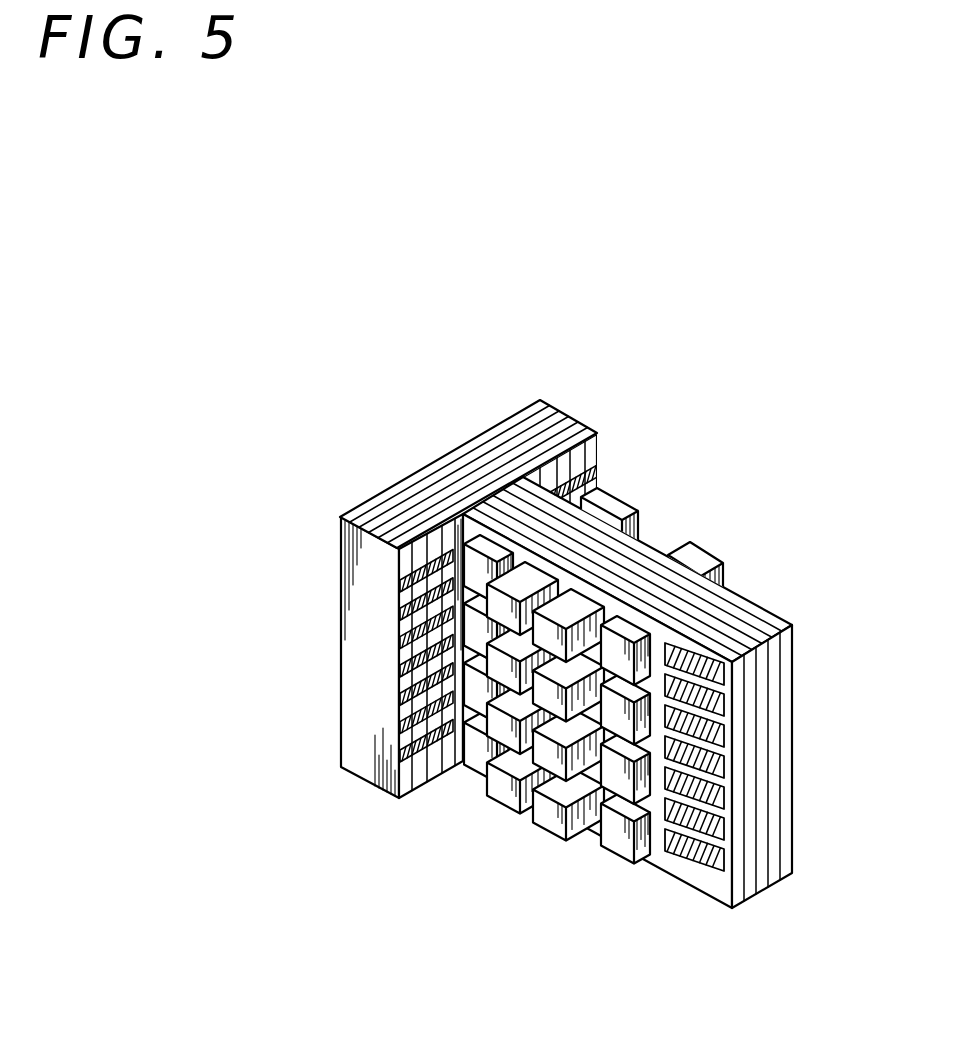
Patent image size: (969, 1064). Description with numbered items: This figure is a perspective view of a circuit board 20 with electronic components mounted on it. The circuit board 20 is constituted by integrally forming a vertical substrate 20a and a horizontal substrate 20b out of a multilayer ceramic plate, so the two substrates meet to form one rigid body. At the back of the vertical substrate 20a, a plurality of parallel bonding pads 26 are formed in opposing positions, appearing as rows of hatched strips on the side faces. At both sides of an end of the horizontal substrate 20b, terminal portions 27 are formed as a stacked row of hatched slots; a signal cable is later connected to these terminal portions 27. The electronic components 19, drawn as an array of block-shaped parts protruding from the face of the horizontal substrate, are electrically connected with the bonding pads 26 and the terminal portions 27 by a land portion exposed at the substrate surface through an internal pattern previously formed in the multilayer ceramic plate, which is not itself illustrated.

The electronic components 19 is at (700, 560).
The circuit board 20 is at (381, 479).
The vertical substrate 20a is at (558, 437).
The horizontal substrate 20b is at (738, 612).
The bonding pads 26 is at (600, 459).
The terminal portions 27 is at (727, 813).